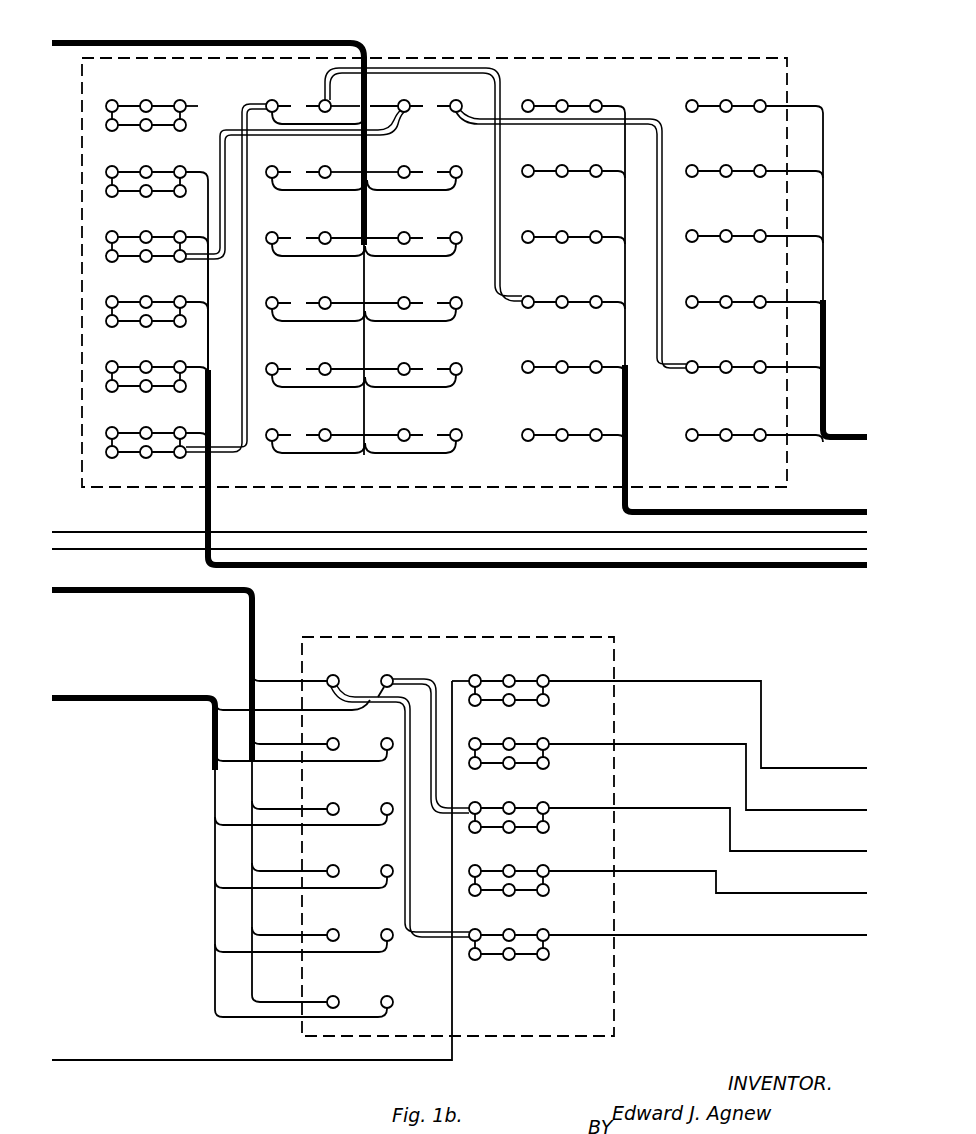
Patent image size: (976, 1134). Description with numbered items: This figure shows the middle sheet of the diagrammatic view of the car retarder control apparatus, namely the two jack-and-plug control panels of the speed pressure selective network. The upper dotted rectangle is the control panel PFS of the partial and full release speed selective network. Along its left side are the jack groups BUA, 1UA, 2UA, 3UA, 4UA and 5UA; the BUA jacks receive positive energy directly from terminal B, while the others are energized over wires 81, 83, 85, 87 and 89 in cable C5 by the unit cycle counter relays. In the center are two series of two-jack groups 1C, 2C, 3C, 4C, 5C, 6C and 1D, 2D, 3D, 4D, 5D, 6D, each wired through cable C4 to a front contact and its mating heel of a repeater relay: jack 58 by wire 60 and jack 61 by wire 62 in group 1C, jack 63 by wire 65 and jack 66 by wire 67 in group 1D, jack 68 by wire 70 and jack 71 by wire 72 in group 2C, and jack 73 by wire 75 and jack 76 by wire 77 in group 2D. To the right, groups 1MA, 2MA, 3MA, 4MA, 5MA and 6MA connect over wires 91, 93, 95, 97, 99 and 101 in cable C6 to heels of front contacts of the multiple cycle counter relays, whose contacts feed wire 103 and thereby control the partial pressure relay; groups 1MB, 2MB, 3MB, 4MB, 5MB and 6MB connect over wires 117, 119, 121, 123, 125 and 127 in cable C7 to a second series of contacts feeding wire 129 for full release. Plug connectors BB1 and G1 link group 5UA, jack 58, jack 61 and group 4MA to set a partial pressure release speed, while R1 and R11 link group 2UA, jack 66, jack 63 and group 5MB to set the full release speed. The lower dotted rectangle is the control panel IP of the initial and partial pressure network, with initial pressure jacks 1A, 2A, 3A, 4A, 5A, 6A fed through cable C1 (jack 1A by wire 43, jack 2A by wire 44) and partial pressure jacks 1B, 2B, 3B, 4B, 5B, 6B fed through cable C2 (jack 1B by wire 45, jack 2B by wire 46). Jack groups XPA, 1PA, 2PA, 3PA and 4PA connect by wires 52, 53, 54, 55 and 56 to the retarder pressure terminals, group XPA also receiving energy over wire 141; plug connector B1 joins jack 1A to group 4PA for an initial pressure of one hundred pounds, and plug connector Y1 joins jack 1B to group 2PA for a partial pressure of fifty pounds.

The cable C4 is at (252, 40).
The control panel PFS is at (452, 52).
The group of jacks BUA is at (146, 105).
The positive terminal B is at (199, 106).
The group of jacks 1UA is at (146, 171).
The wire 81 is at (197, 261).
The group of jacks 2UA is at (146, 236).
The wire 83 is at (197, 294).
The group of jacks 3UA is at (146, 301).
The wire 85 is at (197, 326).
The group of jacks 4UA is at (146, 366).
The wire 87 is at (197, 364).
The group of jacks 5UA is at (146, 432).
The wire 89 is at (197, 430).
The cable C5 is at (862, 566).
The plug connector R1 is at (220, 134).
The plug connector BB1 is at (246, 448).
The jack 58 is at (264, 97).
The group of jacks 1C is at (298, 93).
The jack 61 is at (332, 97).
The wire 60 is at (318, 122).
The wire 62 is at (341, 119).
The plug connector G1 is at (500, 305).
The jack 66 is at (396, 97).
The group of jacks 1D is at (410, 93).
The jack 63 is at (460, 97).
The wire 67 is at (390, 122).
The wire 65 is at (535, 121).
The plug connector R11 is at (662, 120).
The jack 71 is at (264, 163).
The group of jacks 2C is at (298, 159).
The jack 68 is at (330, 163).
The wire 70 is at (345, 185).
The wire 72 is at (307, 199).
The jack 76 is at (393, 163).
The group of jacks 2D is at (430, 159).
The jack 73 is at (461, 163).
The wire 77 is at (382, 185).
The wire 75 is at (421, 199).
The group of jacks 3C is at (315, 233).
The group of jacks 4C is at (315, 298).
The group of jacks 5C is at (315, 364).
The group of jacks 6C is at (315, 430).
The group of jacks 3D is at (413, 233).
The group of jacks 4D is at (413, 298).
The group of jacks 5D is at (413, 364).
The group of jacks 6D is at (413, 430).
The group of jacks 1MA is at (562, 95).
The wire 91 is at (613, 98).
The group of jacks 2MA is at (562, 160).
The wire 93 is at (613, 163).
The group of jacks 3MA is at (562, 226).
The wire 95 is at (613, 229).
The group of jacks 4MA is at (562, 291).
The wire 97 is at (613, 294).
The group of jacks 5MA is at (562, 356).
The wire 99 is at (613, 359).
The group of jacks 6MA is at (562, 424).
The wire 101 is at (615, 427).
The cable C6 is at (862, 512).
The group of jacks 1MB is at (726, 95).
The wire 117 is at (794, 99).
The group of jacks 2MB is at (726, 160).
The wire 119 is at (794, 164).
The group of jacks 3MB is at (726, 225).
The wire 121 is at (794, 229).
The group of jacks 4MB is at (726, 291).
The wire 123 is at (794, 295).
The group of jacks 5MB is at (726, 356).
The wire 125 is at (794, 360).
The group of jacks 6MB is at (726, 424).
The wire 127 is at (794, 428).
The cable C7 is at (862, 437).
The wire 103 is at (566, 527).
The wire 129 is at (120, 550).
The cable C1 is at (82, 588).
The cable C2 is at (82, 696).
The wire 43 is at (289, 670).
The wire 45 is at (292, 700).
The wire 44 is at (289, 733).
The wire 46 is at (300, 805).
The control panel IP is at (452, 632).
The repeater relay jack 1A is at (334, 669).
The repeater relay jack 1B is at (387, 674).
The plug connector B1 is at (416, 872).
The plug connector Y1 is at (436, 681).
The repeater relay jack 2A is at (332, 733).
The repeater relay jack 2B is at (307, 738).
The repeater relay jack 3A is at (332, 798).
The repeater relay jack 3B is at (307, 803).
The repeater relay jack 4A is at (297, 860).
The repeater relay jack 4B is at (306, 865).
The repeater relay jack 5A is at (298, 924).
The repeater relay jack 5B is at (307, 929).
The repeater relay jack 6A is at (332, 991).
The repeater relay jack 6B is at (386, 991).
The group of jacks XPA is at (500, 679).
The wire 141 is at (90, 1060).
The group of jacks 1PA is at (509, 742).
The group of jacks 2PA is at (509, 806).
The group of jacks 3PA is at (509, 869).
The group of jacks 4PA is at (509, 933).
The wire 52 is at (708, 724).
The wire 53 is at (708, 777).
The wire 54 is at (708, 829).
The wire 55 is at (708, 882).
The wire 56 is at (708, 924).